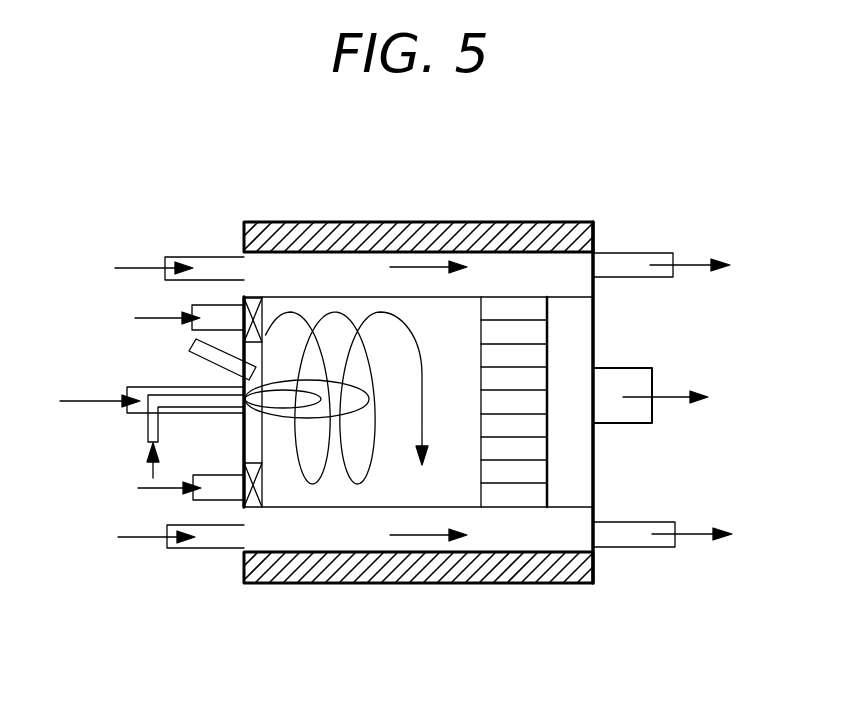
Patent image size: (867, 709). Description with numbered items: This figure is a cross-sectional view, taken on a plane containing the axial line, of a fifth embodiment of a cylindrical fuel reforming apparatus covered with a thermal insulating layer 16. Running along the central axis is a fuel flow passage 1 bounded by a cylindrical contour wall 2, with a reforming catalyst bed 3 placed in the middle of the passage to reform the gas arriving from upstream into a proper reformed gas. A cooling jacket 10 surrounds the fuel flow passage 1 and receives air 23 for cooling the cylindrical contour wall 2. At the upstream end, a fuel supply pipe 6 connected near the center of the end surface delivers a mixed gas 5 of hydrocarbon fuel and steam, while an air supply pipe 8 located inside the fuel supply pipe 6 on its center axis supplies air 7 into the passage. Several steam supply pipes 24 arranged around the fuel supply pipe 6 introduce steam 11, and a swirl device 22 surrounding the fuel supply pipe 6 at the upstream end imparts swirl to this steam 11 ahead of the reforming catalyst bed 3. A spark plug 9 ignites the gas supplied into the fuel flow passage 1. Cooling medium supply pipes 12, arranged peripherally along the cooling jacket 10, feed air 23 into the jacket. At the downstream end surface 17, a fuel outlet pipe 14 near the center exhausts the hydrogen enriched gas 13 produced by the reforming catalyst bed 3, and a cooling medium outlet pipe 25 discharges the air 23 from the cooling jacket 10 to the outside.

The fuel flow passage 1 is at (444, 421).
The cylindrical contour wall 2 is at (575, 297).
The reforming catalyst bed 3 is at (545, 360).
The mixed gas 5 is at (78, 403).
The fuel supply pipe 6 is at (130, 390).
The air 7 is at (152, 465).
The air supply pipe 8 is at (148, 420).
The spark plug 9 is at (192, 345).
The cooling jacket 10 is at (318, 265).
The steam 11 is at (140, 318).
The cooling medium supply pipes 12 is at (210, 257).
The hydrogen enriched gas 13 is at (668, 396).
The fuel outlet pipe 14 is at (648, 423).
The thermal insulating layer 16 is at (525, 238).
The end surface in the downstream side 17 is at (598, 450).
The swirl device 22 is at (242, 272).
The air 23 is at (140, 266).
The steam supply pipes 24 is at (190, 312).
The cooling medium outlet pipe 25 is at (628, 250).